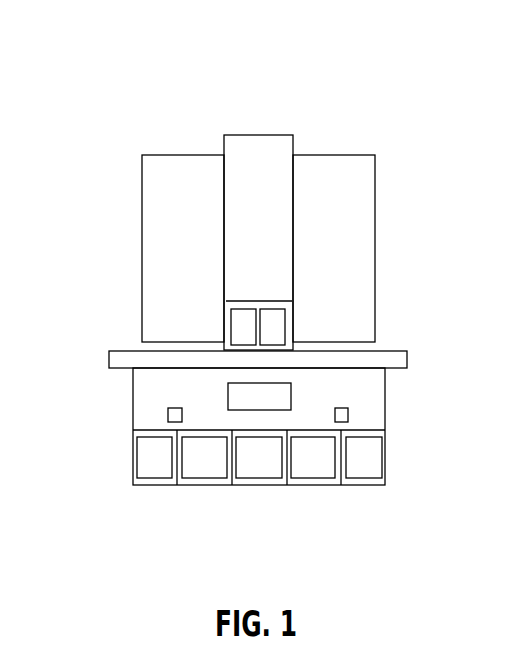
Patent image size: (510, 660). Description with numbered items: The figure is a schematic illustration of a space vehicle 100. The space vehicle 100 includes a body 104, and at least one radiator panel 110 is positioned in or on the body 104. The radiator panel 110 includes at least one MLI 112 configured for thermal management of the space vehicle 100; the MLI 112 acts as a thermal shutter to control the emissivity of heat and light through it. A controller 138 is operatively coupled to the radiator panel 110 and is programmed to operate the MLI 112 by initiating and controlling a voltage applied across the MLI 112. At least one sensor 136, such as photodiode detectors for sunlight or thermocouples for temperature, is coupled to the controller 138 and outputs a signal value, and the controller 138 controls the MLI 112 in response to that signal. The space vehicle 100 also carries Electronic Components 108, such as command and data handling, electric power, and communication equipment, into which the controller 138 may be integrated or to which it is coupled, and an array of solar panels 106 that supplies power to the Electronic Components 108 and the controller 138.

The space vehicle 100 is at (365, 83).
The body 104 is at (141, 383).
The array of solar panels 106 is at (149, 216).
The Electronic Components 108 is at (275, 332).
The radiator panel 110 is at (202, 485).
The MLI 112 is at (177, 462).
The sensor 136 is at (168, 413).
The controller 138 is at (293, 399).